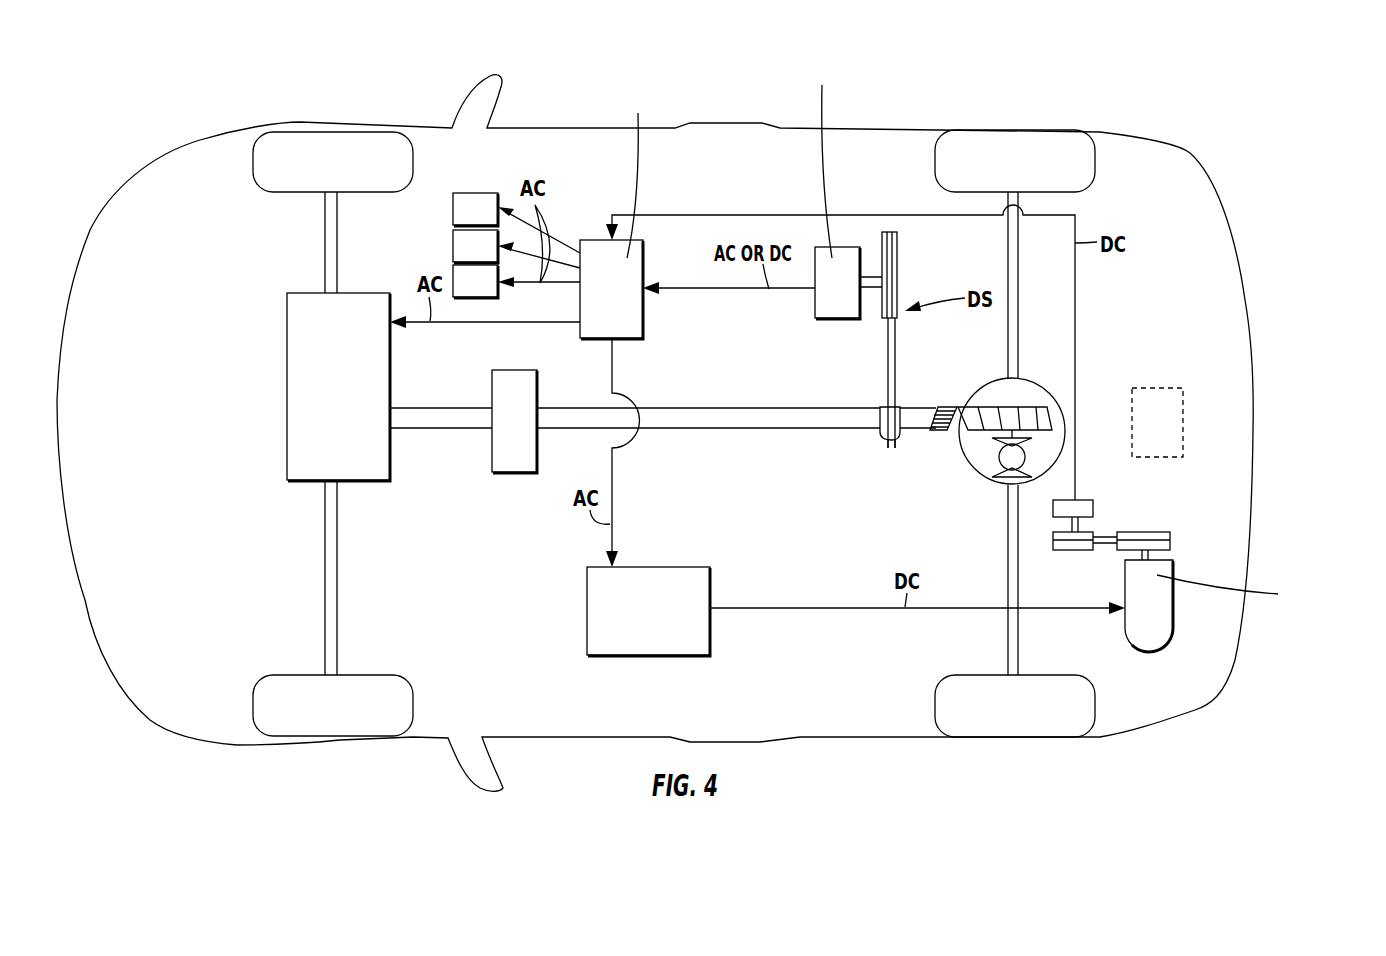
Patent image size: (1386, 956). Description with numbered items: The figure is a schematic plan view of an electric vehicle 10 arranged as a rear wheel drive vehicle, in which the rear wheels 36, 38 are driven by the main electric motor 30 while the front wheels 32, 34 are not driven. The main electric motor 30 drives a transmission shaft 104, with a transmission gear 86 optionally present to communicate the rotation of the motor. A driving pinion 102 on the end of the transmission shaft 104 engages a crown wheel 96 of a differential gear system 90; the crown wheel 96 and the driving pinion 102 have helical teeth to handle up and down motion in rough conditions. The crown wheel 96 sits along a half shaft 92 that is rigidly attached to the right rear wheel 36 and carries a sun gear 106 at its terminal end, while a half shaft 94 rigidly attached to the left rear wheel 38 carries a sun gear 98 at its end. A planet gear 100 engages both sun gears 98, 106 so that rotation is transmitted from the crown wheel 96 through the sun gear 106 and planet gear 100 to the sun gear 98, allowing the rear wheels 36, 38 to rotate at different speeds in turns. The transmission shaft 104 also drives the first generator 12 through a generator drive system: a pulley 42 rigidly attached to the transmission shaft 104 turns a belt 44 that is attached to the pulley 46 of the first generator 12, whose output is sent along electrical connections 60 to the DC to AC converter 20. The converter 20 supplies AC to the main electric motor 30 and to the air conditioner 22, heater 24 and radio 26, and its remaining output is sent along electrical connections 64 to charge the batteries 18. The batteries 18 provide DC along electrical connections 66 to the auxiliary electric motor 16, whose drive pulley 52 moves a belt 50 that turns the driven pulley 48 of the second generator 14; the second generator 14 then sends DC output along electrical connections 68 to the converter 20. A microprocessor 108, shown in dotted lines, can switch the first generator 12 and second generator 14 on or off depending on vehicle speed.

The electric vehicle 10 is at (1190, 151).
The first generator 12 is at (824, 294).
The second generator 14 is at (1080, 506).
The auxiliary electric motor 16 is at (1136, 612).
The one or more batteries 18 is at (635, 647).
The DC to AC converter 20 is at (599, 302).
The air conditioner 22 is at (463, 222).
The heater 24 is at (463, 259).
The radio 26 is at (463, 294).
The main electric motor 30 is at (325, 432).
The front wheel 32 is at (305, 141).
The front wheel 34 is at (370, 727).
The right rear wheel 36 is at (985, 140).
The left rear wheel 38 is at (1050, 728).
The pulley 42 is at (880, 438).
The belt 44 is at (896, 345).
The pulley 46 is at (898, 297).
The driven pulley 48 is at (1068, 552).
The belt 50 is at (1104, 535).
The drive pulley 52 is at (1155, 532).
The electrical connections 60 is at (745, 291).
The electrical connections 64 is at (614, 500).
The electrical connections 66 is at (836, 610).
The electrical connections 68 is at (1075, 304).
The transmission gear 86 is at (502, 432).
The differential gear system 90 is at (937, 470).
The half shaft 92 is at (1008, 272).
The half shaft 94 is at (1008, 540).
The crown wheel 96 is at (1040, 408).
The sun gear 98 is at (1000, 478).
The planet gear 100 is at (1000, 458).
The driving pinion 102 is at (946, 406).
The transmission shaft 104 is at (805, 420).
The sun gear 106 is at (1000, 441).
The microprocessor 108 is at (1138, 432).